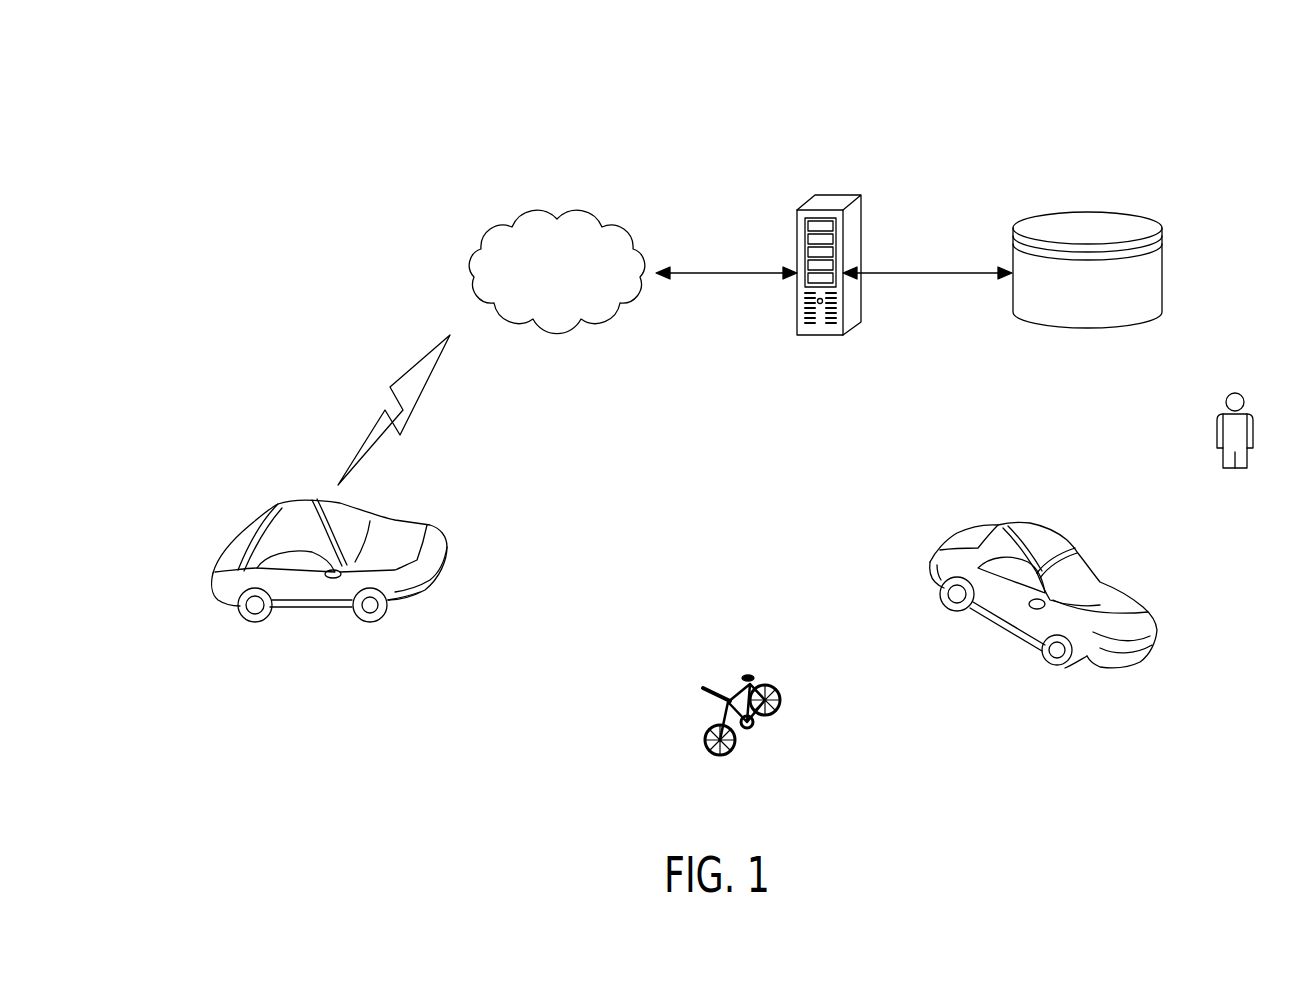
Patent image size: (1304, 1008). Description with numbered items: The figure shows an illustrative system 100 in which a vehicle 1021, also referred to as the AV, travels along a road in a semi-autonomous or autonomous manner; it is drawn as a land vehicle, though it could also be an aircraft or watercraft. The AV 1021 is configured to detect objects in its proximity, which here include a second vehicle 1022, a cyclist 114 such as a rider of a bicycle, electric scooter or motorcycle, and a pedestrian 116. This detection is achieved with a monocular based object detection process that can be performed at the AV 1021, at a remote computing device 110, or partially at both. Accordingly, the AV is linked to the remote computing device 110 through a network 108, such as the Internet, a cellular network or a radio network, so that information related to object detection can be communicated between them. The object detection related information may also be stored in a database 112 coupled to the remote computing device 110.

The system 100 is at (243, 152).
The network 108 is at (558, 336).
The remote computing device 110 is at (820, 383).
The database 112 is at (1080, 383).
The vehicle 1021 is at (332, 678).
The vehicle 1022 is at (1037, 730).
The cyclist 114 is at (838, 742).
The pedestrian 116 is at (1233, 520).